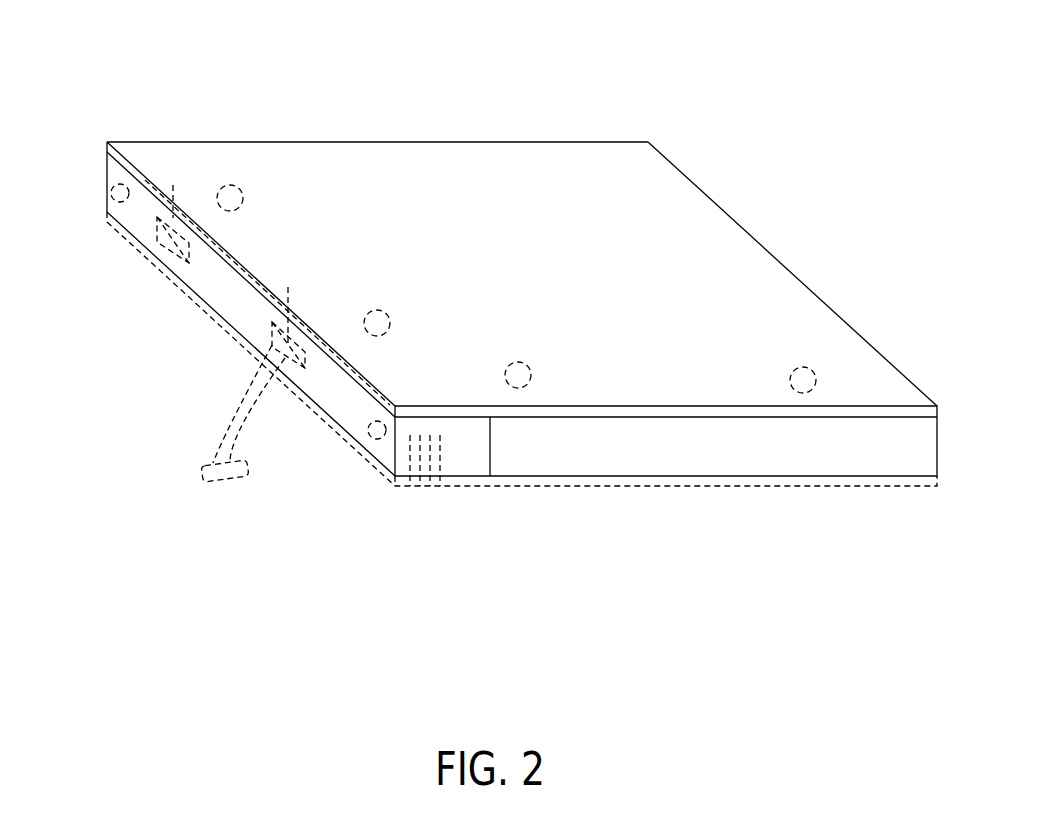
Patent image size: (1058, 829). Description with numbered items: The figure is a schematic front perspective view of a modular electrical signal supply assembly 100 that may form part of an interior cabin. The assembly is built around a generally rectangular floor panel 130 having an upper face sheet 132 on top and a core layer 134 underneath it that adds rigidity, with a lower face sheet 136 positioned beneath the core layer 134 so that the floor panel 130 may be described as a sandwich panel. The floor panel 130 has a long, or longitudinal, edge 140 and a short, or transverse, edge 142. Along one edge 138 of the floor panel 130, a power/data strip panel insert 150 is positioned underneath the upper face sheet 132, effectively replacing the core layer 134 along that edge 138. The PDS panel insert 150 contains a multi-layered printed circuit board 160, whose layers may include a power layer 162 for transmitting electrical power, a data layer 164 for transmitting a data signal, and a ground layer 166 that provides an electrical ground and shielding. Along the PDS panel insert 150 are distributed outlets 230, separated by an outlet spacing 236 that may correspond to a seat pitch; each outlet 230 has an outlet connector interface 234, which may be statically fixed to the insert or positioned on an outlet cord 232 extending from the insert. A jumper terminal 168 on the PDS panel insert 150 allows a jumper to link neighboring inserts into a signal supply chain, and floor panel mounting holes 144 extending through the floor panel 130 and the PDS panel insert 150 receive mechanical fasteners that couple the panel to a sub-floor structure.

The modular electrical signal supply assembly 100 is at (613, 48).
The floor panel 130 is at (594, 138).
The upper face sheet 132 is at (308, 160).
The core layer 134 is at (887, 437).
The lower face sheet 136 is at (852, 477).
The edge 138 is at (140, 207).
The long edge 140 is at (690, 180).
The short edge 142 is at (432, 142).
The floor panel mounting holes 144 is at (243, 208).
The power/data strip (PDS) panel insert 150 is at (456, 450).
The printed circuit board (PCB) 160 is at (440, 486).
The power layer 162 is at (430, 486).
The data layer 164 is at (420, 486).
The ground layer 166 is at (410, 486).
The jumper terminal 168 is at (110, 192).
The outlet 230 is at (172, 270).
The outlet cord 232 is at (237, 393).
The outlet connector interface 234 is at (180, 258).
The outlet spacing 236 is at (187, 208).